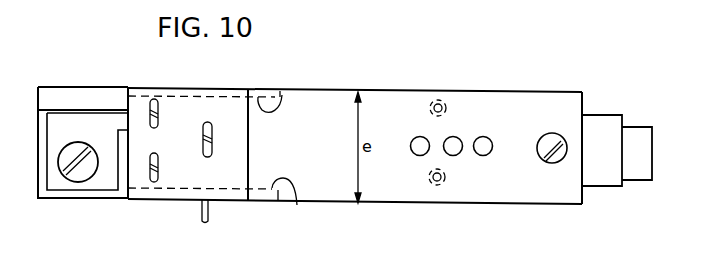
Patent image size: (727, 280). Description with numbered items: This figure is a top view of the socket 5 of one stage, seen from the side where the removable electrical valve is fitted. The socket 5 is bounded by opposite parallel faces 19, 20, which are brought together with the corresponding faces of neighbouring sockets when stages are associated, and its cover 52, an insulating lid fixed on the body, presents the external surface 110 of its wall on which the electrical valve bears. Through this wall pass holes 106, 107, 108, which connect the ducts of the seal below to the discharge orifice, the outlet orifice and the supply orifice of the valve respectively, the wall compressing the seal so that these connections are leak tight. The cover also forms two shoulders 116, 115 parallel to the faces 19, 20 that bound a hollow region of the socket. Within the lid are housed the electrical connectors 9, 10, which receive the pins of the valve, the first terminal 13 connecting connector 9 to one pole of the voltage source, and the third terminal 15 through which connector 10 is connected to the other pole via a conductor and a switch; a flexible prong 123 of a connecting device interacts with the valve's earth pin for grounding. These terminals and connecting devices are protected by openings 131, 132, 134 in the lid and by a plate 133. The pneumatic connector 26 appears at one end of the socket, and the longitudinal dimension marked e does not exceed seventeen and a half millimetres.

The socket 5 is at (662, 93).
The electrical connector 9 is at (202, 130).
The electrical connector 10 is at (148, 117).
The first terminal 13 is at (208, 222).
The third terminal 15 is at (62, 167).
The parallel face 19 is at (388, 204).
The parallel face 20 is at (392, 91).
The pneumatic connector 26 is at (598, 135).
The cover 52 is at (556, 91).
The hole 106 is at (415, 139).
The hole 107 is at (453, 140).
The hole 108 is at (483, 147).
The external surface 110 is at (322, 117).
The shoulder 115 is at (282, 95).
The shoulder 116 is at (297, 205).
The flexible prong 123 is at (150, 170).
The opening 131 is at (158, 108).
The opening 132 is at (158, 172).
The plate 133 is at (58, 98).
The opening 134 is at (212, 132).